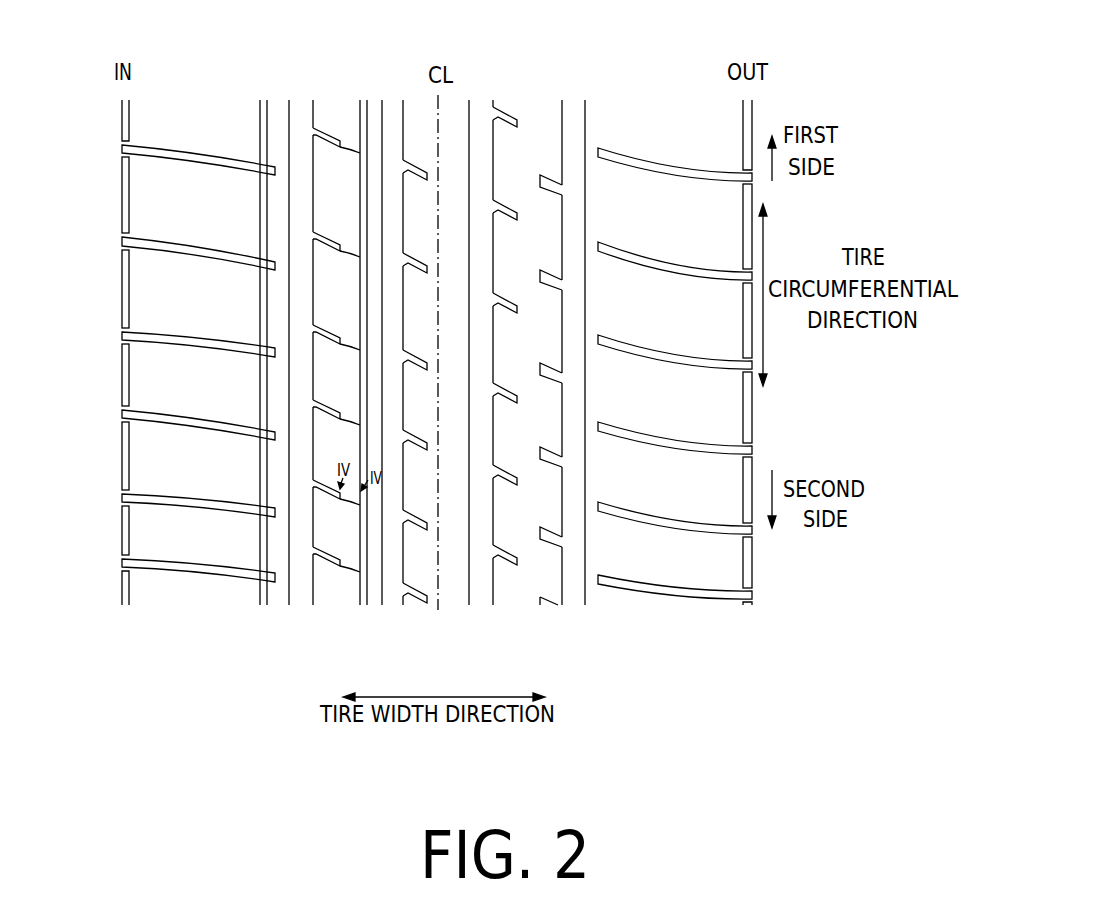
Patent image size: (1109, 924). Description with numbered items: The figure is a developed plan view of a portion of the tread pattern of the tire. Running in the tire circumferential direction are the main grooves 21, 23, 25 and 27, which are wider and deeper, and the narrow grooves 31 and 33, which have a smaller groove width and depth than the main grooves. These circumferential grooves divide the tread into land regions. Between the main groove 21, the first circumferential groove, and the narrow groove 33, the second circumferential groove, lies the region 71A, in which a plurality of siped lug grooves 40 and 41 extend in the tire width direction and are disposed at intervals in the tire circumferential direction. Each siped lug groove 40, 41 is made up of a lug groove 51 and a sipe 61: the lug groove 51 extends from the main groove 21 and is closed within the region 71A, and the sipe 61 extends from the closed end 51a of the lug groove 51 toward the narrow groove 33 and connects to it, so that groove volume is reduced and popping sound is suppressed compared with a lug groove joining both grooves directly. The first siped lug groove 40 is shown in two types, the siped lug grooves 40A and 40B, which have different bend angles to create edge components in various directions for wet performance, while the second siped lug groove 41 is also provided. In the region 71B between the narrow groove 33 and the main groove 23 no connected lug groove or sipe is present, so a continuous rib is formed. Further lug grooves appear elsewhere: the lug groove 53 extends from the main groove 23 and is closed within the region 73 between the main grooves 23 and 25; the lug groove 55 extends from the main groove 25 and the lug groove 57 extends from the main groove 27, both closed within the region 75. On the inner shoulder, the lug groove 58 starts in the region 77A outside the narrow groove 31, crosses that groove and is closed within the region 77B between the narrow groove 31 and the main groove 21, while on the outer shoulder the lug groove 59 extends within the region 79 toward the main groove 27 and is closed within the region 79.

The main groove 21 is at (302, 593).
The main groove 23 is at (400, 588).
The main groove 25 is at (485, 593).
The main groove 27 is at (575, 597).
The narrow groove 31 is at (263, 600).
The narrow groove 33 is at (365, 593).
The first siped lug groove 40 is at (187, 292).
The siped lug groove 40A is at (320, 312).
The siped lug groove 40B is at (329, 160).
The second siped lug groove 41 is at (322, 494).
The lug groove 51 is at (332, 337).
The closed end 51a is at (342, 327).
The lug groove 53 is at (419, 365).
The lug groove 55 is at (513, 402).
The lug groove 57 is at (550, 373).
The lug groove 58 is at (197, 337).
The lug groove 59 is at (663, 360).
The sipe 61 is at (355, 340).
The region 71A is at (343, 105).
The region 71B is at (380, 103).
The region 73 is at (467, 105).
The region 75 is at (537, 105).
The region 77A is at (202, 105).
The region 77B is at (277, 102).
The region 79 is at (652, 103).